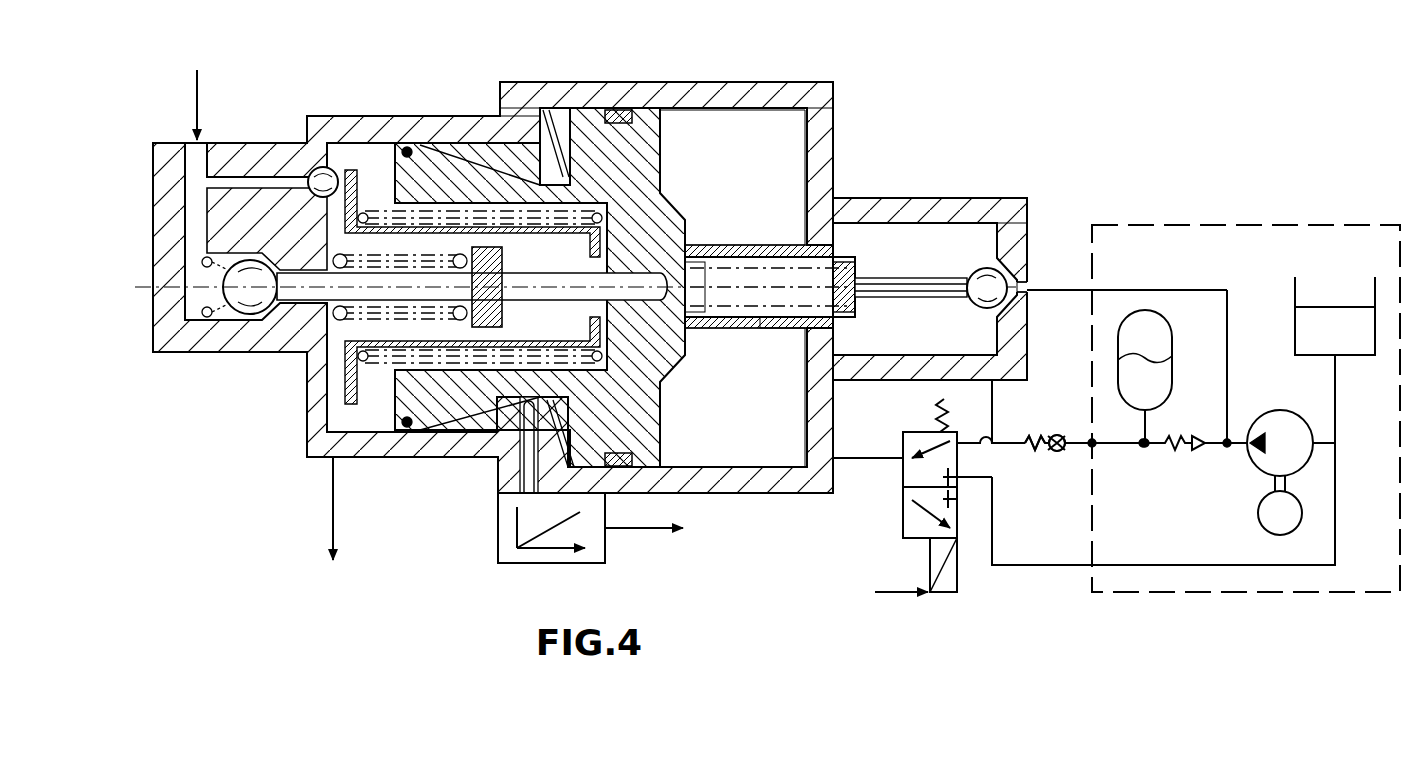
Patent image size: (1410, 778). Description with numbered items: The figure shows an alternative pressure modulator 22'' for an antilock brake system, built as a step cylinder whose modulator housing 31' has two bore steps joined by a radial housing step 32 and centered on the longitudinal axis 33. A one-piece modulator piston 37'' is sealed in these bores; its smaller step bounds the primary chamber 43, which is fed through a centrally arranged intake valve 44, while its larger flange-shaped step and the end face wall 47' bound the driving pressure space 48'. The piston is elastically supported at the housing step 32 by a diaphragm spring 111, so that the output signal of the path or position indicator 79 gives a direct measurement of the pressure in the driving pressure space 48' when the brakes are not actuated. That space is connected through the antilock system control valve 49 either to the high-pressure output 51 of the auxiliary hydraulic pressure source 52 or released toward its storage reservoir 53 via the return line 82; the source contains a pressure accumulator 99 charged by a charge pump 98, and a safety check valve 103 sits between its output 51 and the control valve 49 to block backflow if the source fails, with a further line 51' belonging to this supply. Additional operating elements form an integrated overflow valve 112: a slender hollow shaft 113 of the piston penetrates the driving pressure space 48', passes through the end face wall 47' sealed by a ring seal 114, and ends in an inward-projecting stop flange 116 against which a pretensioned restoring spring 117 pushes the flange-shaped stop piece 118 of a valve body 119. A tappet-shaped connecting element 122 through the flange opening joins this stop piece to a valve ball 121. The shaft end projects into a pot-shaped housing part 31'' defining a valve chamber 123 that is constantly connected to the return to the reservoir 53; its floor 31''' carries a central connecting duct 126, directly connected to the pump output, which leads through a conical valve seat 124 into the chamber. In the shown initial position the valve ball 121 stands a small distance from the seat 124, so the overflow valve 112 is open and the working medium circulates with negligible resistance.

The pressure modulator 22'' is at (518, 265).
The modulator housing 31' is at (666, 73).
The pot-shaped housing part 31'' is at (930, 189).
The floor of the pot-shaped housing part 31''' is at (1039, 277).
The housing step 32 is at (530, 125).
The central longitudinal axis 33 is at (736, 262).
The modulator piston 37'' is at (540, 247).
The primary chamber 43 is at (517, 247).
The intake valve 44 is at (222, 315).
The end face wall 47' is at (770, 397).
The driving pressure space 48' is at (732, 141).
The antilock system control valve 49 is at (905, 505).
The pressure output 51 is at (1104, 472).
The hydraulic line 51' is at (1130, 376).
The auxiliary hydraulic pressure source 52 is at (1260, 240).
The storage reservoir 53 is at (1333, 320).
The path or position indicator 79 is at (505, 535).
The return line 82 is at (1037, 563).
The charge pump 98 is at (1272, 425).
The pressure accumulator 99 is at (1160, 380).
The safety check valve 103 is at (1045, 435).
The diaphragm spring 111 is at (555, 118).
The overflow valve 112 is at (902, 196).
The hollow-tube-shaped shaft 113 is at (705, 332).
The ring seal 114 is at (798, 250).
The stop flange 116 is at (858, 268).
The restoring spring 117 is at (710, 268).
The stop piece 118 is at (780, 332).
The valve body 119 is at (933, 276).
The valve ball 121 is at (975, 300).
The tappet-shaped connecting element 122 is at (890, 297).
The valve chamber 123 is at (985, 240).
The conical valve seat 124 is at (1010, 275).
The central connecting duct 126 is at (1022, 290).